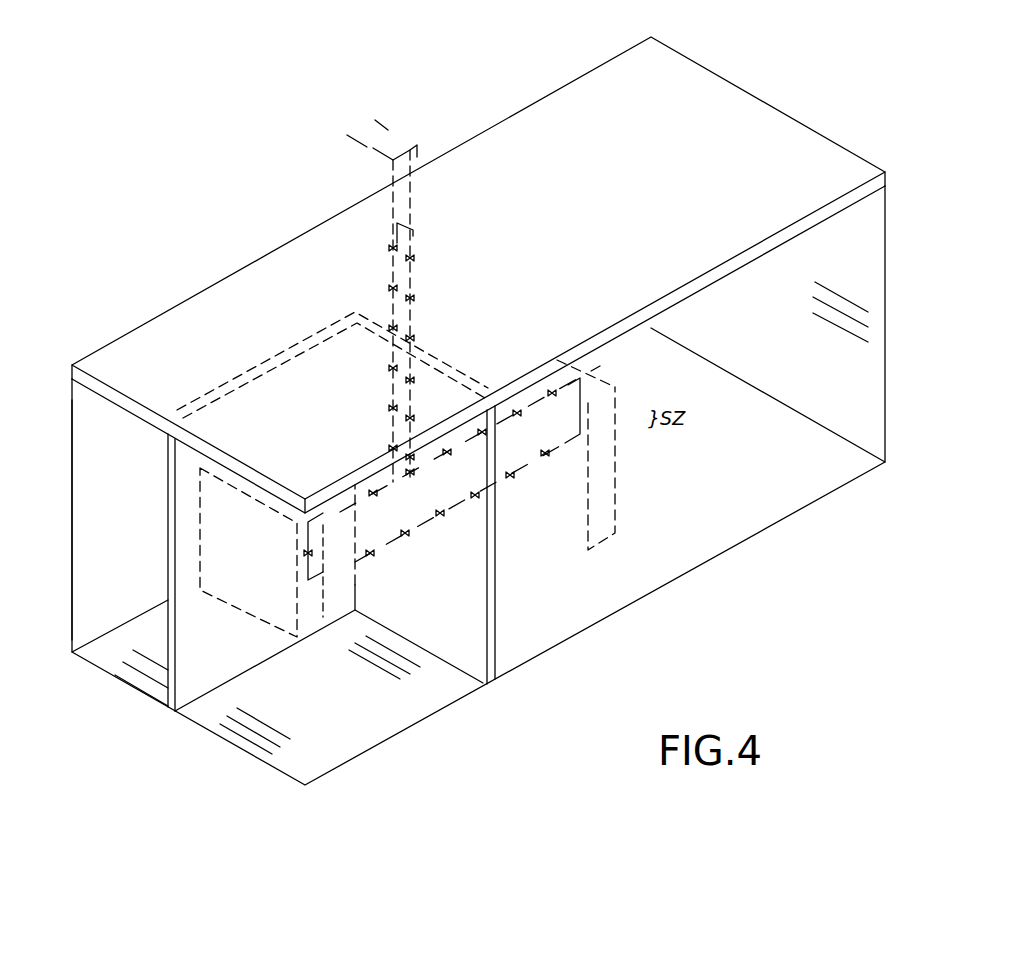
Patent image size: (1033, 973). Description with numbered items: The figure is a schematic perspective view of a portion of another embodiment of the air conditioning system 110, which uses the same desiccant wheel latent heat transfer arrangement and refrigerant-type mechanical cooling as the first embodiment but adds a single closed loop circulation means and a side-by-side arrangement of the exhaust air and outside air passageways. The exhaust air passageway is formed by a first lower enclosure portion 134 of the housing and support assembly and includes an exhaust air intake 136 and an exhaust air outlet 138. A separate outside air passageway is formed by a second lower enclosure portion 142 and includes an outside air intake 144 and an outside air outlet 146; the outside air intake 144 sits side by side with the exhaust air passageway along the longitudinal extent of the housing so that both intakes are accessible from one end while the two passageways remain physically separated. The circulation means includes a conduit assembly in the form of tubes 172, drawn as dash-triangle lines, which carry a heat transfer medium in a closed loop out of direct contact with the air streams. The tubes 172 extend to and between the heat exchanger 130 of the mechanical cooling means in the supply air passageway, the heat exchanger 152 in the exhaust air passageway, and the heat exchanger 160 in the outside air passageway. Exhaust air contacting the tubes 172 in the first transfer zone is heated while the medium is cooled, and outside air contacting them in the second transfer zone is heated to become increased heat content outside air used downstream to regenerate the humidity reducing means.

The air conditioning system 110 is at (745, 545).
The heat exchanger 130 is at (392, 140).
The first lower enclosure portion 134 is at (465, 603).
The exhaust air intake 136 is at (270, 737).
The exhaust air outlet 138 is at (385, 658).
The second lower enclosure portion 142 is at (117, 563).
The outside air intake 144 is at (130, 671).
The outside air outlet 146 is at (815, 283).
The heat exchanger 152 is at (280, 590).
The heat exchanger 160 is at (598, 515).
The tubes 172 is at (418, 326).